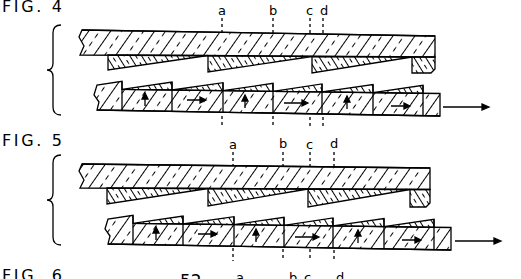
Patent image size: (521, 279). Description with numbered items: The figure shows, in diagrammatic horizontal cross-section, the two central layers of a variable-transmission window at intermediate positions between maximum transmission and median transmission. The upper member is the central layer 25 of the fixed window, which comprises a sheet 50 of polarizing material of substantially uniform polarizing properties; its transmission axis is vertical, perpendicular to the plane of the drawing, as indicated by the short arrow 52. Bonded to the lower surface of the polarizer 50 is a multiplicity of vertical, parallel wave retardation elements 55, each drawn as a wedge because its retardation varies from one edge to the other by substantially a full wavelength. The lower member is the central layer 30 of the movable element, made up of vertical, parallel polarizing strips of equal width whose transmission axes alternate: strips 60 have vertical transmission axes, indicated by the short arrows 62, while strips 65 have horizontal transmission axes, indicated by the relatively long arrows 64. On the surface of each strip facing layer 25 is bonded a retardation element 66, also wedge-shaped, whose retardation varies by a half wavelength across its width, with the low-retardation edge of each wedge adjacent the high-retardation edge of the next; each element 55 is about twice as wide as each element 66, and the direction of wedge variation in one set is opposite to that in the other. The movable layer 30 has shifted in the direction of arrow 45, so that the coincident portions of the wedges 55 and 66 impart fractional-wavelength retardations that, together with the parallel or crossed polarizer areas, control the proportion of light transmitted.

In FIG. 4, the central layer in the fixed window 25 is at (289, 45).
In FIG. 5, the central layer in the fixed window 25 is at (289, 177).
In FIG. 4, the central layer in the movable element 30 is at (297, 103).
In FIG. 5, the central layer in the movable element 30 is at (302, 233).
In FIG. 4, the arrow 45 is at (460, 107).
In FIG. 5, the arrow 45 is at (468, 241).
In FIG. 4, the sheet of polarizing material 50 is at (402, 34).
In FIG. 5, the sheet of polarizing material 50 is at (407, 168).
In FIG. 4, the short arrow 52 is at (250, 41).
In FIG. 5, the short arrow 52 is at (258, 177).
In FIG. 4, the wave retardation elements 55 is at (208, 59).
In FIG. 5, the wave retardation elements 55 is at (208, 193).
In FIG. 4, the strips 60 is at (135, 104).
In FIG. 5, the strips 60 is at (143, 238).
In FIG. 4, the short arrows 62 is at (151, 104).
In FIG. 5, the short arrows 62 is at (165, 239).
In FIG. 4, the long arrows 64 is at (388, 112).
In FIG. 5, the long arrows 64 is at (403, 241).
In FIG. 4, the strips 65 is at (417, 111).
In FIG. 5, the strips 65 is at (425, 246).
In FIG. 4, the retardation element 66 is at (308, 88).
In FIG. 5, the retardation element 66 is at (307, 222).